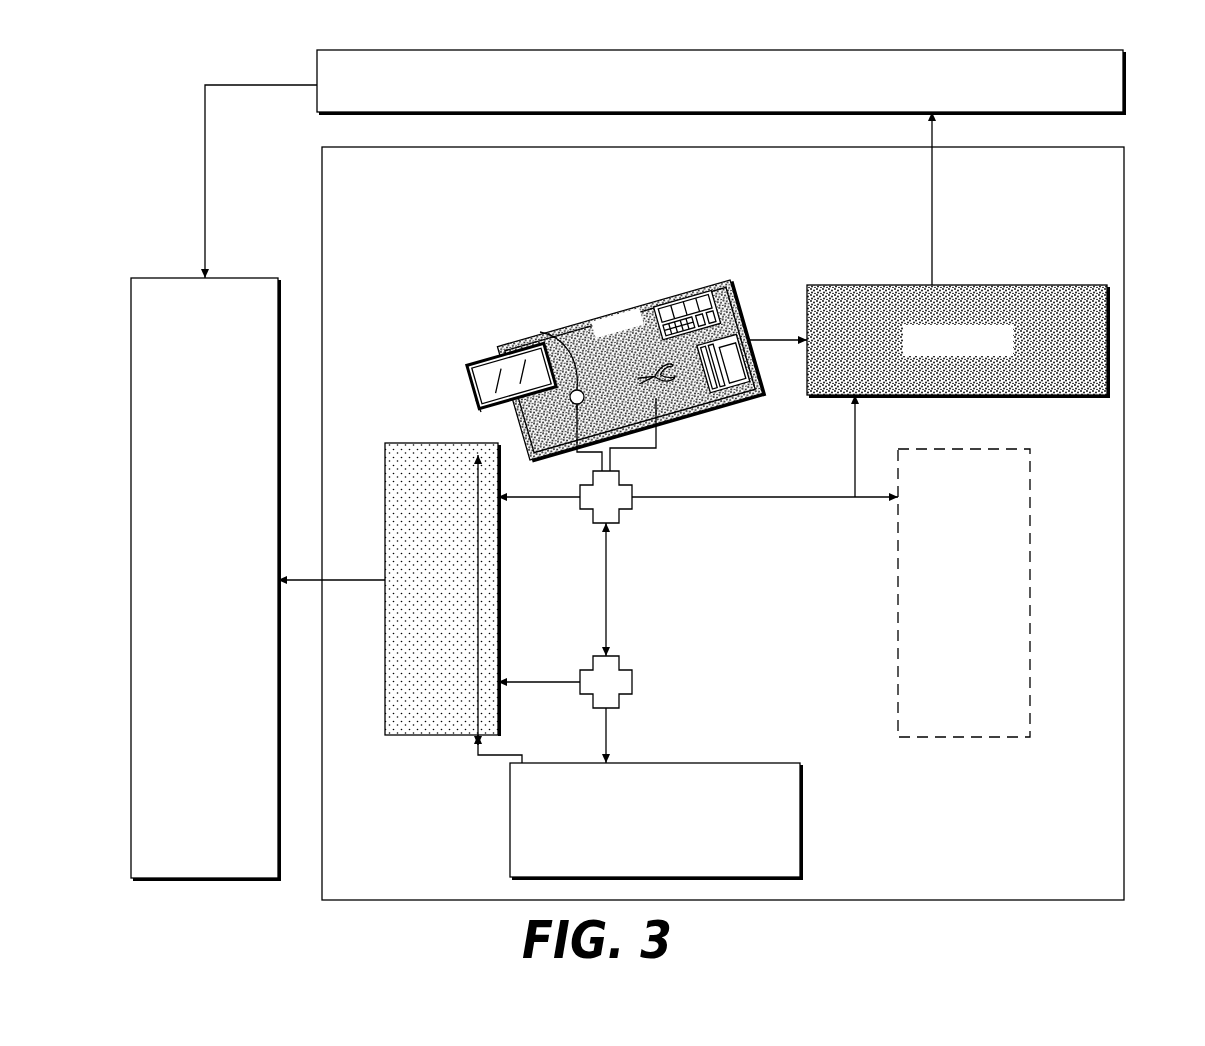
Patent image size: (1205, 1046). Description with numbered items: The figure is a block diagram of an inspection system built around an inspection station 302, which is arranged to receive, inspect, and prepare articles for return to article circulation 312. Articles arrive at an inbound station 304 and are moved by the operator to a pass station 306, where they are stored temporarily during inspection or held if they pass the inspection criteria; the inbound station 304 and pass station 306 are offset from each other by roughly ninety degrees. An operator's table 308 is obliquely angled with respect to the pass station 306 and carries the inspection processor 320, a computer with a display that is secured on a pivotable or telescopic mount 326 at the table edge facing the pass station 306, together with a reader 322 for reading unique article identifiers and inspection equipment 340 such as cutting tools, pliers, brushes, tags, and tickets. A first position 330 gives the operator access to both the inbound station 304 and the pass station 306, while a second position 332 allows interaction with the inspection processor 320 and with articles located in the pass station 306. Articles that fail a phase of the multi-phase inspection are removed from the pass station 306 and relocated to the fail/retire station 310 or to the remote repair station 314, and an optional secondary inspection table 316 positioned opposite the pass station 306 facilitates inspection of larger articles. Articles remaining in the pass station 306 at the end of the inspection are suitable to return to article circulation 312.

The inspection station 302 is at (322, 200).
The inbound station 304 is at (510, 853).
The pass station 306 is at (385, 692).
The operator's table 308 is at (572, 326).
The fail/retire station 310 is at (905, 286).
The article circulation 312 is at (131, 805).
The remote repair station 314 is at (1124, 95).
The secondary inspection table 316 is at (965, 737).
The inspection processor 320 is at (487, 351).
The reader 322 is at (540, 332).
The mount 326 is at (479, 410).
The first position 330 is at (632, 683).
The second position 332 is at (618, 516).
The inspection equipment 340 is at (648, 290).